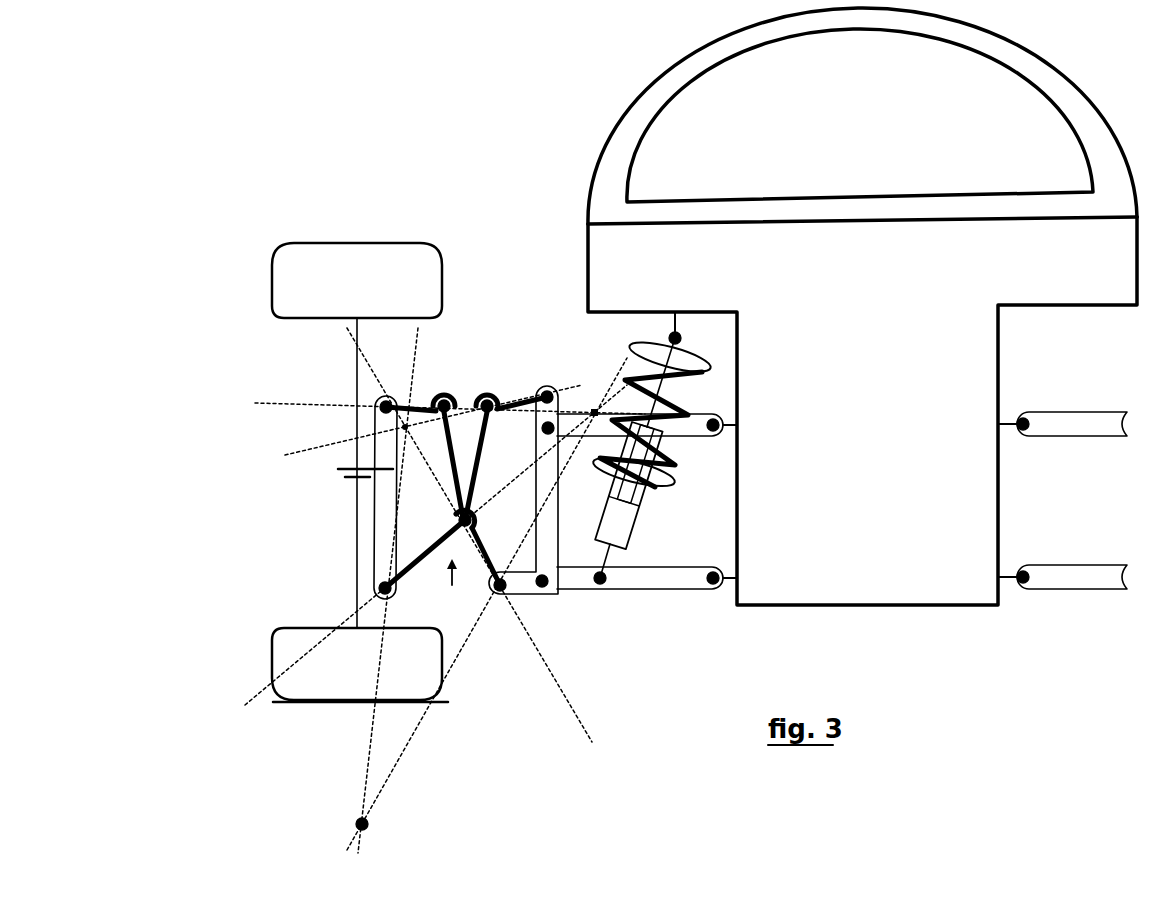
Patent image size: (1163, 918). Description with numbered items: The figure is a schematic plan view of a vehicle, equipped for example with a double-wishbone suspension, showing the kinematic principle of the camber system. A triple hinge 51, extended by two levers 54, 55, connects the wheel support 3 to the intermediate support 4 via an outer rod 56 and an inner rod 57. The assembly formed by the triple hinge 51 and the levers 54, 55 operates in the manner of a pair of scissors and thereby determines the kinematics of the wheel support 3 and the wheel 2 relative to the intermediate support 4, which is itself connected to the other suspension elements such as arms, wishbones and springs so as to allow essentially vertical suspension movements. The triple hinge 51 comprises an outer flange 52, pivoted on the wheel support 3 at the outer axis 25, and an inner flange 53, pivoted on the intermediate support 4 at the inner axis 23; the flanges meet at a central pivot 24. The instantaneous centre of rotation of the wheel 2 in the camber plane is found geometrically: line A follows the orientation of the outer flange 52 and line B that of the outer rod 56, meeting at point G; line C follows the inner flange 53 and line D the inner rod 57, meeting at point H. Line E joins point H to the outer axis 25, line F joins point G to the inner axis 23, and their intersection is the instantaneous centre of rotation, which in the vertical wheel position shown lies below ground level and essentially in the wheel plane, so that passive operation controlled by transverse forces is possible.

The wheel 2 is at (357, 570).
The wheel support 3 is at (382, 508).
The intermediate support 4 is at (550, 545).
The inner axis 23 is at (508, 596).
The central pivot 24 is at (478, 525).
The outer axis 25 is at (377, 585).
The triple hinge 51 is at (452, 588).
The outer flange 52 is at (432, 551).
The inner flange 53 is at (485, 560).
The lever 54 is at (452, 445).
The lever 55 is at (482, 457).
The outer rod 56 is at (418, 403).
The inner rod 57 is at (517, 398).